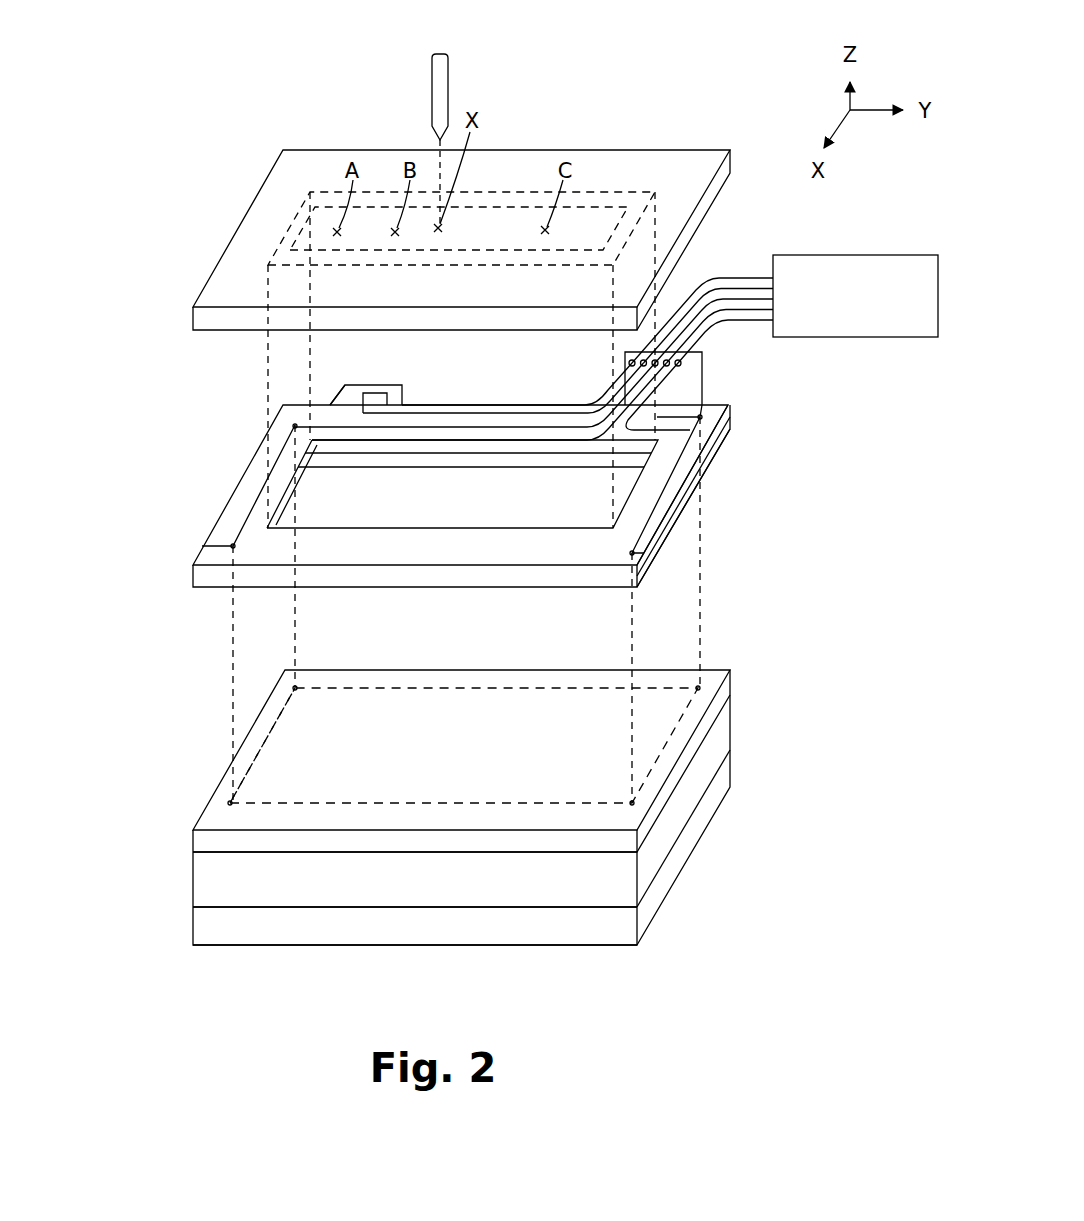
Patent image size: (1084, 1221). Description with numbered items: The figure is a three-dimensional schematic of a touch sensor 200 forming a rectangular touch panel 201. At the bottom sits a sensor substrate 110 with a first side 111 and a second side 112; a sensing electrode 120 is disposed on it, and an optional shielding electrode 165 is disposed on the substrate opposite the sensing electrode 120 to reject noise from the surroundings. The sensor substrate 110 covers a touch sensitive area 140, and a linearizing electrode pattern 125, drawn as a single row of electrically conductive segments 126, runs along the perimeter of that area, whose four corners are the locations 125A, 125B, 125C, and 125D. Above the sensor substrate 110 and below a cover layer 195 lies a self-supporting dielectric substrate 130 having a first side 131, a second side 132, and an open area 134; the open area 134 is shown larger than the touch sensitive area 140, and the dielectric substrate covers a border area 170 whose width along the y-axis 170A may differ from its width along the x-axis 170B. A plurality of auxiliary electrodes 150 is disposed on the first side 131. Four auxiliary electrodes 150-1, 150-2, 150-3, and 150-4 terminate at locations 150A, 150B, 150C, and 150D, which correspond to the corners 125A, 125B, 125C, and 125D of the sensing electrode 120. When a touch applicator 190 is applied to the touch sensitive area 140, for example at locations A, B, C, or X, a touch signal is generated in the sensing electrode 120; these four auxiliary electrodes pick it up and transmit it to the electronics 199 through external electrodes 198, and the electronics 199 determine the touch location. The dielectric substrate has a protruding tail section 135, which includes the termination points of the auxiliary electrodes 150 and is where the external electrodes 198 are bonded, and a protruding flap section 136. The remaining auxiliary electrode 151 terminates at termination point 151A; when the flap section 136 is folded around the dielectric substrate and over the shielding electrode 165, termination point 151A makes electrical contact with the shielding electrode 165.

The sensor substrate 110 is at (732, 739).
The first side 111 is at (664, 807).
The second side 112 is at (664, 862).
The sensing electrode 120 is at (732, 681).
The linearizing electrode pattern 125 is at (255, 758).
The location 125A is at (700, 686).
The location 125B is at (632, 805).
The location 125C is at (230, 804).
The location 125D is at (297, 686).
The electrically conductive segments 126 is at (277, 722).
The self-supporting dielectric substrate 130 is at (713, 444).
The first side 131 is at (701, 470).
The second side 132 is at (691, 497).
The open area 134 is at (280, 477).
The protruding tail section 135 is at (610, 393).
The protruding flap section 136 is at (340, 392).
The touch sensitive area 140 is at (507, 230).
The auxiliary electrodes 150 is at (701, 404).
The auxiliary electrode 150-1 is at (689, 393).
The auxiliary electrode 150-2 is at (650, 520).
The auxiliary electrode 150-3 is at (245, 518).
The auxiliary electrode 150-4 is at (303, 405).
The location 150A is at (702, 418).
The location 150B is at (632, 553).
The location 150C is at (202, 546).
The location 150D is at (293, 427).
The auxiliary electrode 151 is at (443, 408).
The termination point 151A is at (366, 392).
The shielding electrode 165 is at (192, 935).
The border area 170 is at (487, 553).
The width of border area along the y-axis 170A is at (646, 498).
The width of border area along the x-axis 170B is at (410, 554).
The touch applicator 190 is at (428, 83).
The cover layer 195 is at (213, 268).
The external electrodes 198 is at (727, 278).
The electronics 199 is at (843, 338).
The touch sensor 200 is at (708, 64).
The touch panel 201 is at (127, 294).